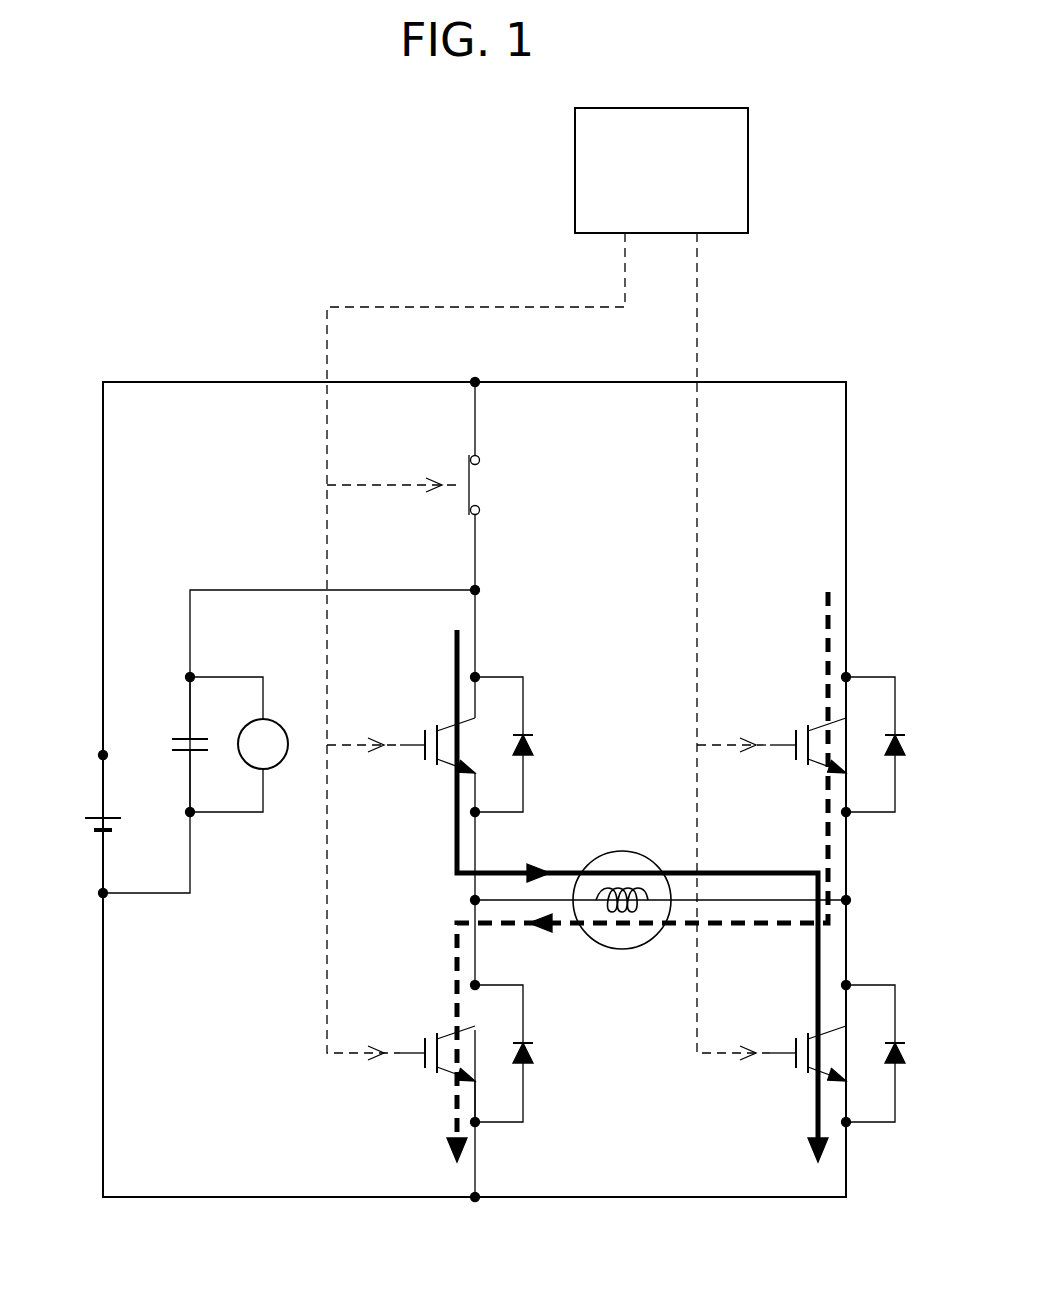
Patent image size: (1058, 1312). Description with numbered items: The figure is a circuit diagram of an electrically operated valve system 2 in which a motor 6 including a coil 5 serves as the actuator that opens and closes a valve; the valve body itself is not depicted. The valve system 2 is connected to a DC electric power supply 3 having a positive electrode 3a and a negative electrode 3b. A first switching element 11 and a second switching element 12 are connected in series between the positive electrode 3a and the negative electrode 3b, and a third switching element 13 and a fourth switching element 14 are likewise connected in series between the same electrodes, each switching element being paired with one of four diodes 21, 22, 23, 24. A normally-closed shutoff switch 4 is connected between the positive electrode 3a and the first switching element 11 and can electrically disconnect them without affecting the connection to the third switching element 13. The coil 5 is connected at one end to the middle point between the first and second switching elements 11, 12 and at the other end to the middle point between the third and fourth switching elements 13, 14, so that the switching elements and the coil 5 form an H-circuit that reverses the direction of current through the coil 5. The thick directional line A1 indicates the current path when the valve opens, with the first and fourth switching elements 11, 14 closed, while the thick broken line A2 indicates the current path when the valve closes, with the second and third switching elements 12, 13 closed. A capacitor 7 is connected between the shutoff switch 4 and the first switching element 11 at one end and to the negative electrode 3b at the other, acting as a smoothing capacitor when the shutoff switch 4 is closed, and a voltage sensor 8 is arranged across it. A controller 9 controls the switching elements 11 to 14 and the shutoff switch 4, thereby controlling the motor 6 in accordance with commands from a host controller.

The electrically operated valve system 2 is at (152, 255).
The electric power supply 3 is at (104, 816).
The positive electrode 3a is at (100, 755).
The negative electrode 3b is at (100, 893).
The shutoff switch 4 is at (466, 475).
The coil 5 is at (618, 886).
The motor 6 is at (622, 949).
The capacitor 7 is at (178, 733).
The voltage sensor 8 is at (283, 768).
The controller 9 is at (575, 170).
The first switching element 11 is at (430, 754).
The second switching element 12 is at (430, 1062).
The third switching element 13 is at (800, 754).
The fourth switching element 14 is at (800, 1062).
The first diode 21 is at (528, 737).
The second diode 22 is at (528, 1047).
The third diode 23 is at (898, 737).
The fourth diode 24 is at (898, 1045).
The current path in opening the valve A1 is at (816, 1113).
The current path in closing the valve A2 is at (825, 625).